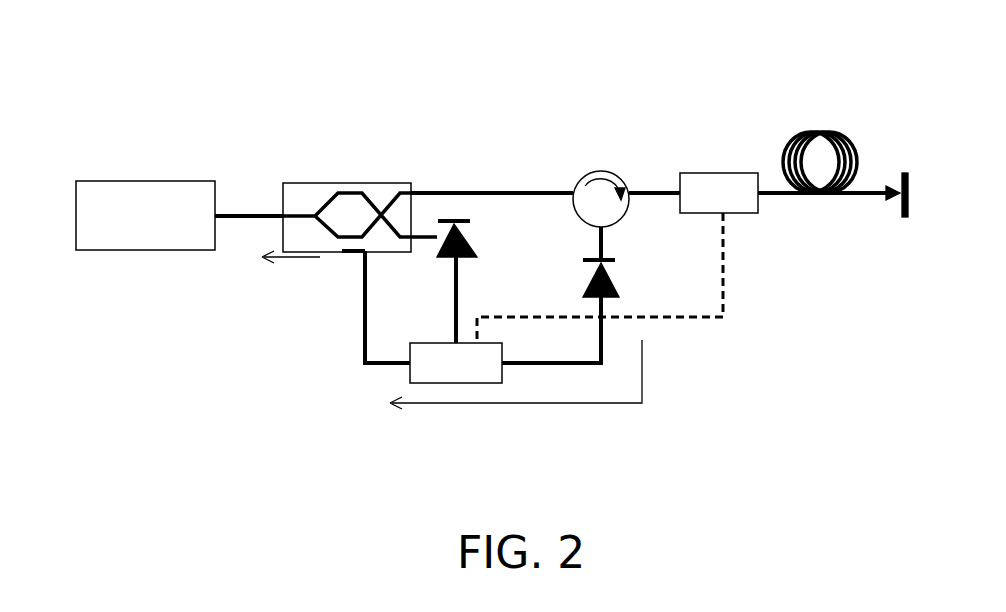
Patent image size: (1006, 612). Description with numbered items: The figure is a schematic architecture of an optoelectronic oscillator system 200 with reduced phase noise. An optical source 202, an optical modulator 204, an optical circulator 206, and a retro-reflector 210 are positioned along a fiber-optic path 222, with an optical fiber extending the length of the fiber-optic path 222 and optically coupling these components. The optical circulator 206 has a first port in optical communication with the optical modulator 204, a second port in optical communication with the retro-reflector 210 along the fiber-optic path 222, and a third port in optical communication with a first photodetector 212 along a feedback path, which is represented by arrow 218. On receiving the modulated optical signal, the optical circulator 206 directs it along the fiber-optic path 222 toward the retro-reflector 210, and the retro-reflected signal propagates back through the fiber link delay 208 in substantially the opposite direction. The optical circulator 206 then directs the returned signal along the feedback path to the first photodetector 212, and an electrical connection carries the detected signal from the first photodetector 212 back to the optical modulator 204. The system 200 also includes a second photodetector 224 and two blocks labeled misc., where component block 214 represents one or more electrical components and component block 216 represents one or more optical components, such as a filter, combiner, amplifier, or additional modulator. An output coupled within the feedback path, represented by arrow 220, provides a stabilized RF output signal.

The optoelectronic oscillator system 200 is at (521, 88).
The optical source 202 is at (175, 181).
The optical modulator 204 is at (411, 183).
The optical circulator 206 is at (617, 179).
The fiber link delay 208 is at (858, 165).
The retro-reflector 210 is at (908, 217).
The first photodetector 212 is at (612, 275).
The component block for electrical components 214 is at (408, 341).
The component block for optical components 216 is at (717, 173).
The feedback path 218 is at (642, 375).
The output 220 is at (307, 257).
The fiber-optic path 222 is at (478, 193).
The second photodetector 224 is at (477, 250).